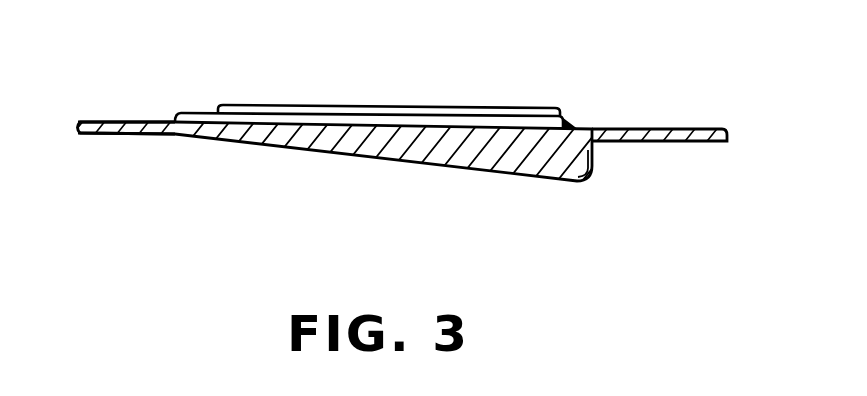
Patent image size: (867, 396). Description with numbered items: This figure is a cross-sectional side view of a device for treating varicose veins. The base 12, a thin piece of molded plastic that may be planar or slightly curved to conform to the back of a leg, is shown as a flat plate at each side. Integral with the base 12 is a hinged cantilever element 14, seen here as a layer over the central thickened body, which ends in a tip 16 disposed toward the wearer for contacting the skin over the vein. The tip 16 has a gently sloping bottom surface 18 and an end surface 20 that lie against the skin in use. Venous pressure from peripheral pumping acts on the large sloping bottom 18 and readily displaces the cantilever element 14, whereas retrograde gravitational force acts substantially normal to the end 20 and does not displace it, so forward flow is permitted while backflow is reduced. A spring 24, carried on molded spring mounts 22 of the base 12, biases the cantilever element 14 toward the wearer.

The base 12 is at (113, 123).
The hinged cantilever element 14 is at (355, 142).
The tip 16 is at (520, 143).
The bottom surface 18 is at (427, 167).
The end surface 20 is at (594, 163).
The molded spring mounts 22 is at (513, 113).
The spring 24 is at (572, 122).